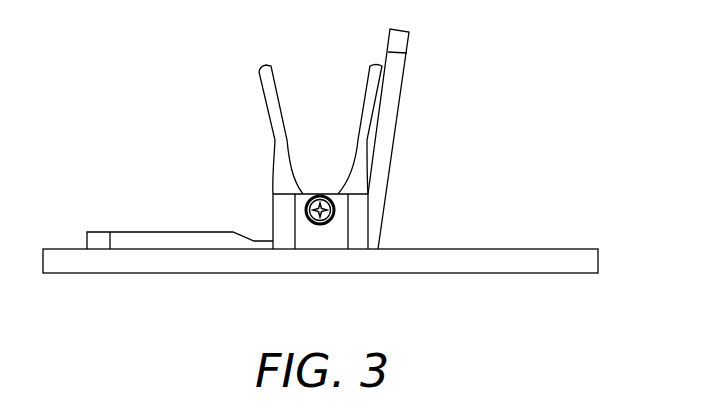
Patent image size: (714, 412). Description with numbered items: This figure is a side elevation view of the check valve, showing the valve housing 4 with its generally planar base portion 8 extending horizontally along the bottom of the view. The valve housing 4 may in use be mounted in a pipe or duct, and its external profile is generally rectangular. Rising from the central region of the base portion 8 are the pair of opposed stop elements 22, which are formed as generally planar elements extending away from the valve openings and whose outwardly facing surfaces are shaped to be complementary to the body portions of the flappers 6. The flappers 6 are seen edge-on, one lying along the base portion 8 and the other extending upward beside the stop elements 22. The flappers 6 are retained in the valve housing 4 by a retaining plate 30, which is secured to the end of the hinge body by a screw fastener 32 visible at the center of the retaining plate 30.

The valve housing 4 is at (566, 238).
The flapper 6 is at (138, 238).
The base portion 8 is at (567, 263).
The stop element 22 is at (266, 90).
The retaining plate 30 is at (322, 238).
The screw fastener 32 is at (338, 216).